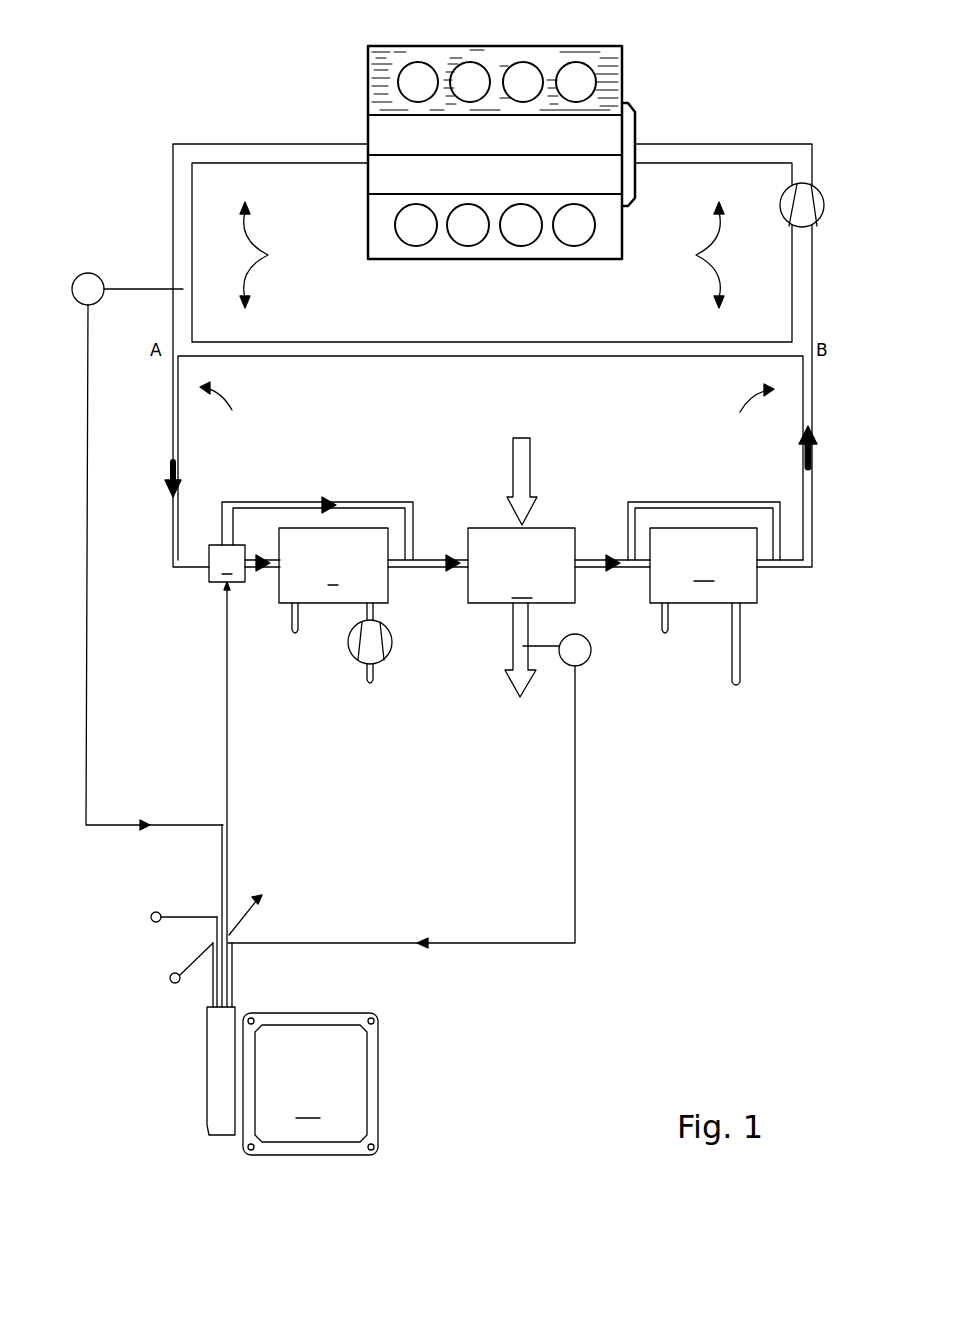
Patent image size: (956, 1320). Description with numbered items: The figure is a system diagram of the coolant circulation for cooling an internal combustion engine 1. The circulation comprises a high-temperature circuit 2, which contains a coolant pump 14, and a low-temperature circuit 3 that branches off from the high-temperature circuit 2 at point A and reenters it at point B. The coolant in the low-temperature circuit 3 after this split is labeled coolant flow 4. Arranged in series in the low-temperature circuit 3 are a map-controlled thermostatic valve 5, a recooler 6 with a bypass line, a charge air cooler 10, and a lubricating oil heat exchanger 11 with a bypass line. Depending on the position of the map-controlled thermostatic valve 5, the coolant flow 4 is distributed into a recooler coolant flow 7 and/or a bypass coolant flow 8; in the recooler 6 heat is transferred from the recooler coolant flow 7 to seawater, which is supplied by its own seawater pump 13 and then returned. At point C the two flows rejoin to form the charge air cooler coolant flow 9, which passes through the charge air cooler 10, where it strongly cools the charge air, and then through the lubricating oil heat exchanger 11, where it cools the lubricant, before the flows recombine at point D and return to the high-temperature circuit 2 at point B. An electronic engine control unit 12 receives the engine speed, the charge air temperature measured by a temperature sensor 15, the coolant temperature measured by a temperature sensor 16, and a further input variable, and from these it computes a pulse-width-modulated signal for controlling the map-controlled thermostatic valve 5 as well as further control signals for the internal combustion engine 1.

The internal combustion engine 1 is at (608, 66).
The high-temperature circuit 2 is at (482, 255).
The low-temperature circuit 3 is at (487, 409).
The coolant flow 4 is at (171, 472).
The map-controlled thermostatic valve 5 is at (227, 567).
The recooler 6 is at (343, 593).
The recooler coolant flow 7 is at (259, 556).
The bypass coolant flow 8 is at (330, 500).
The charge air cooler coolant flow 9 is at (432, 556).
The charge air cooler 10 is at (521, 566).
The lubricating oil heat exchanger 11 is at (715, 609).
The electronic engine control unit 12 is at (225, 870).
The seawater pump 13 is at (393, 642).
The coolant pump 14 is at (820, 192).
The temperature sensor 15 is at (586, 663).
The temperature sensor 16 is at (92, 276).